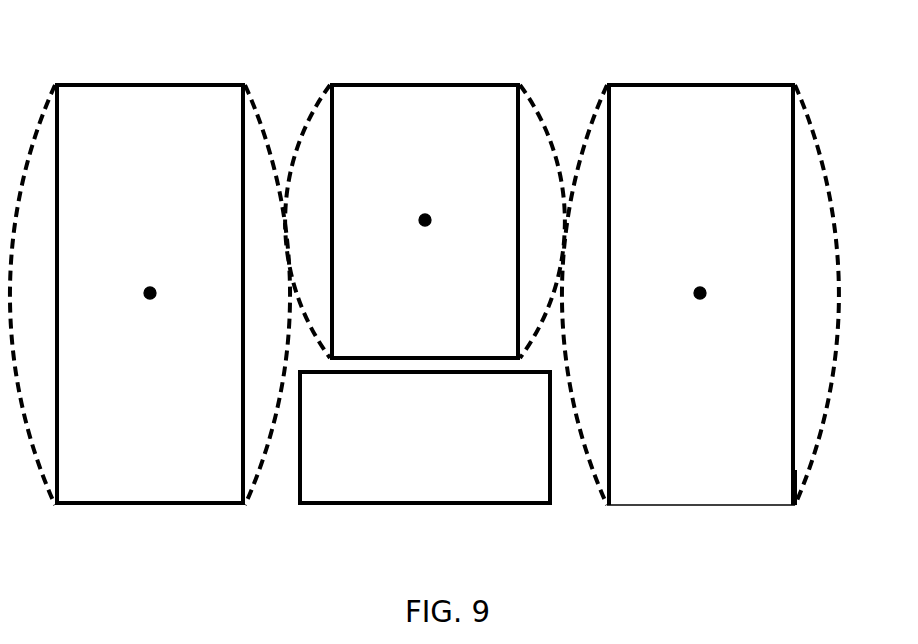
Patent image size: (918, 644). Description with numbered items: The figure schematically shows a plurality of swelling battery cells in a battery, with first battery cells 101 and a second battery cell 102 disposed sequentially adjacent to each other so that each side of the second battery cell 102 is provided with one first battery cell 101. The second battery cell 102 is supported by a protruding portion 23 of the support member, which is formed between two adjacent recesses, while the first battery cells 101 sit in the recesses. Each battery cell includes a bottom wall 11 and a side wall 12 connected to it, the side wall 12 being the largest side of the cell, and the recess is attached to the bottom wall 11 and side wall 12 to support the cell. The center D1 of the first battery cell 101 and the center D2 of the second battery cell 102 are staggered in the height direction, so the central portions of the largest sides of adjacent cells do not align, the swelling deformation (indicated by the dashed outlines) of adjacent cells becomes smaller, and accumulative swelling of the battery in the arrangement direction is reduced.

The first battery cell 101 is at (147, 140).
The second battery cell 102 is at (382, 140).
The protruding portion 23 is at (457, 497).
The bottom wall 11 is at (682, 505).
The side wall 12 is at (795, 478).
The center of the first battery cell D1 is at (152, 286).
The center of the second battery cell D2 is at (428, 213).